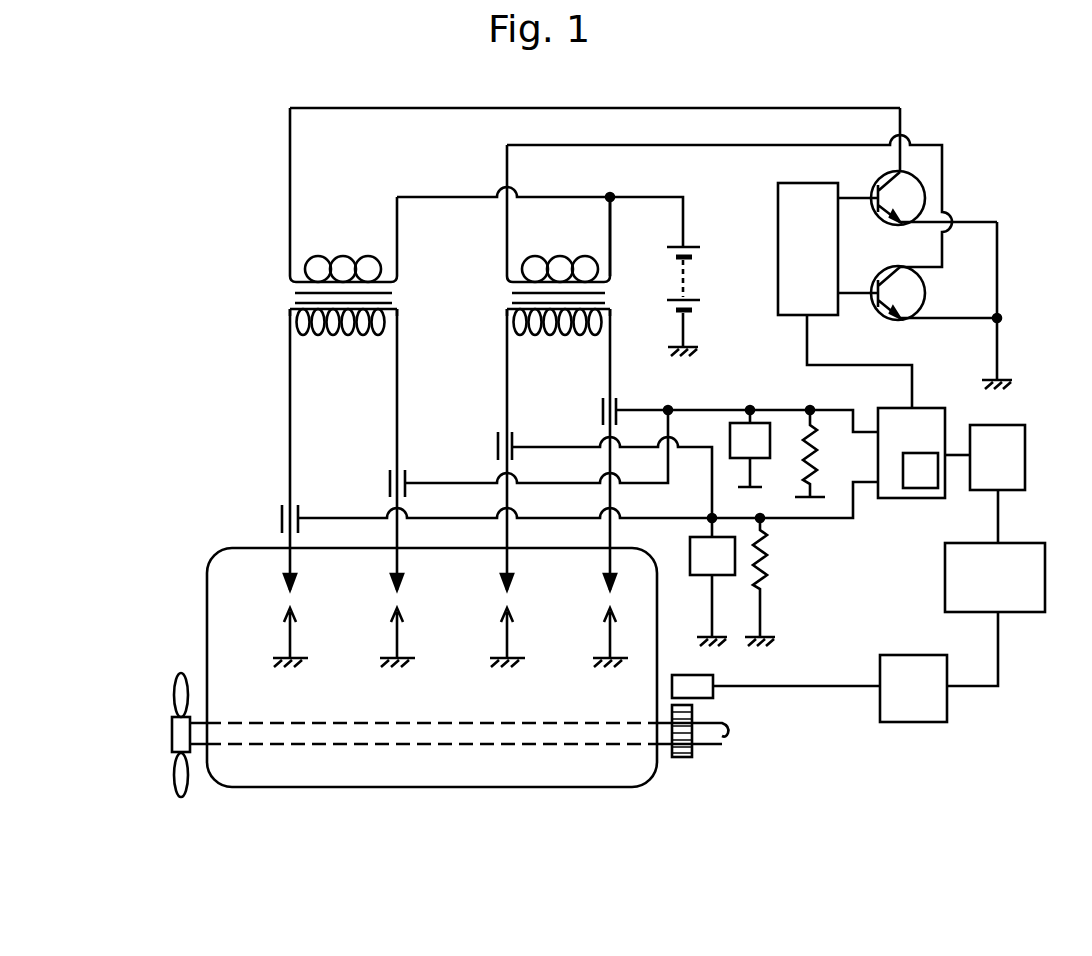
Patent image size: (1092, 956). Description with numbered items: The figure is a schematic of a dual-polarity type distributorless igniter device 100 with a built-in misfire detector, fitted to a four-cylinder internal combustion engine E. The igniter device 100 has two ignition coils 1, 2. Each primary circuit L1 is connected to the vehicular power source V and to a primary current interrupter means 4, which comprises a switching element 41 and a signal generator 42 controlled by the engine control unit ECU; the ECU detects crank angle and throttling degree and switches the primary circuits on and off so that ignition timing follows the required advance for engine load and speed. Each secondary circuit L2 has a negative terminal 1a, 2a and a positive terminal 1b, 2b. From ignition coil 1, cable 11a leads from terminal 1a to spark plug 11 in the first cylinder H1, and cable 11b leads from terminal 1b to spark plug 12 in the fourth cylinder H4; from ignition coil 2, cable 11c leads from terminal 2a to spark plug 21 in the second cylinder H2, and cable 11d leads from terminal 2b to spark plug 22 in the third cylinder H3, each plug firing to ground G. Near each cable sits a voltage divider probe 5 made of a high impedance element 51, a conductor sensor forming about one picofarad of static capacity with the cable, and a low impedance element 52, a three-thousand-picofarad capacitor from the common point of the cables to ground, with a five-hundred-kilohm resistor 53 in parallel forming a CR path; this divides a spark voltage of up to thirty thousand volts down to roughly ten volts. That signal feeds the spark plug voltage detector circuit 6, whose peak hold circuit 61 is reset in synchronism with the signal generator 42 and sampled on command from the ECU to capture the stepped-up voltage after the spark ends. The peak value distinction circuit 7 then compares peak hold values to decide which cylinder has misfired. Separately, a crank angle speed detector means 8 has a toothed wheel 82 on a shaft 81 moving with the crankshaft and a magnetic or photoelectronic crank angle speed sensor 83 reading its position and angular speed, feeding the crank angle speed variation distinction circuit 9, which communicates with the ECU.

The dual-polarity type distributorless igniter device 100 is at (654, 100).
The ignition coil 1 is at (409, 228).
The ignition coil 2 is at (502, 298).
The primary circuit L1 is at (375, 108).
The secondary circuit L2 is at (290, 388).
The negative spark plug voltage terminal 1a is at (290, 334).
The positive spark plug voltage terminal 1b is at (396, 336).
The negative spark plug voltage terminal 2a is at (507, 334).
The positive spark plug voltage terminal 2b is at (608, 336).
The cable 11a is at (290, 440).
The cable 11b is at (397, 437).
The cable 11c is at (507, 416).
The cable 11d is at (610, 372).
The spark plug 11 is at (286, 580).
The spark plug 12 is at (393, 580).
The spark plug 21 is at (503, 580).
The spark plug 22 is at (606, 580).
The high impedance element 51 is at (282, 520).
The low impedance element 52 is at (760, 455).
The resistor 53 is at (814, 430).
The voltage divider probe 5 is at (728, 404).
The spark plug voltage detector circuit 6 is at (878, 406).
The peak hold circuit 61 is at (921, 470).
The peak value distinction circuit 7 is at (1025, 438).
The engine control unit ECU is at (995, 551).
The crank angle speed variation distinction circuit 9 is at (926, 706).
The crank angle speed detector means 8 is at (768, 741).
The shaft 81 is at (725, 742).
The toothed wheel 82 is at (684, 757).
The crank angle speed sensor 83 is at (712, 694).
The primary current interrupter means 4 is at (895, 245).
The switching element 41 is at (870, 215).
The signal generator 42 is at (823, 272).
The vehicular power source V is at (688, 247).
The internal combustion engine E is at (207, 583).
The ground G is at (436, 643).
The first cylinder H1 is at (291, 696).
The second cylinder H2 is at (507, 696).
The third cylinder H3 is at (609, 696).
The fourth cylinder H4 is at (399, 696).